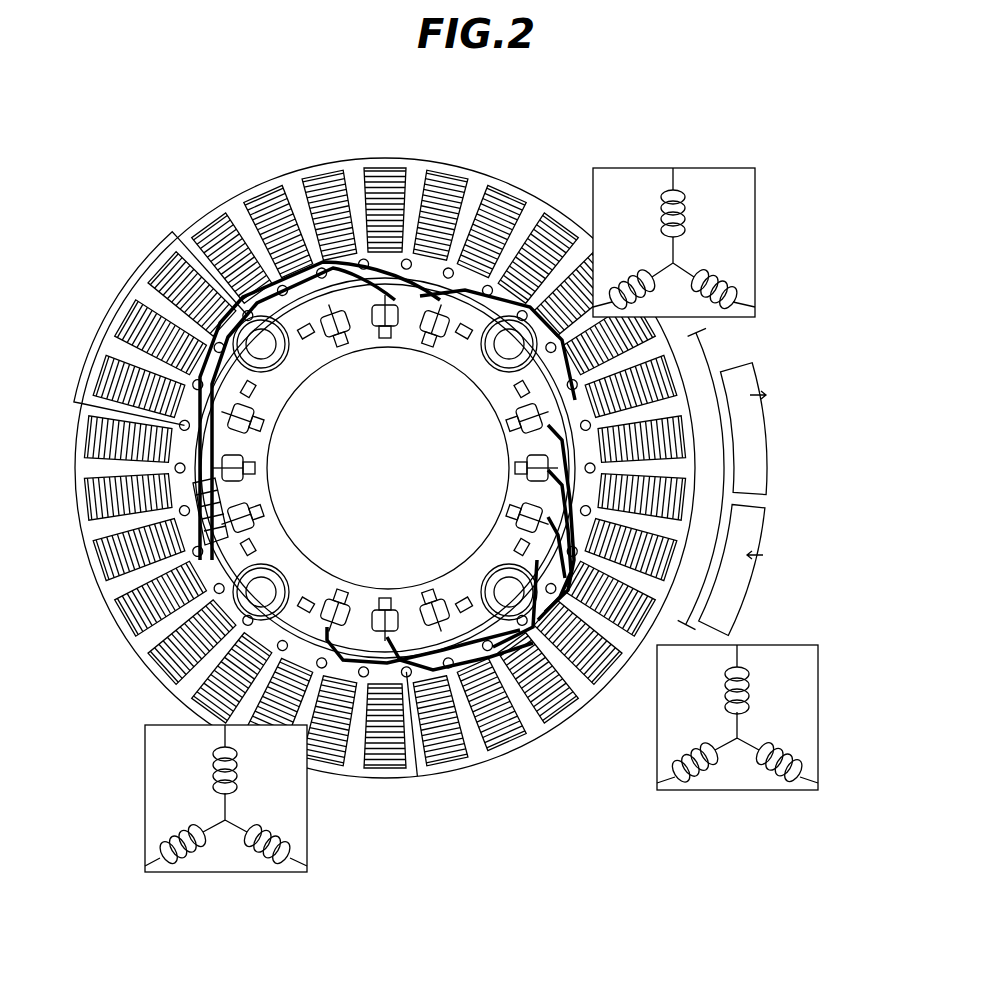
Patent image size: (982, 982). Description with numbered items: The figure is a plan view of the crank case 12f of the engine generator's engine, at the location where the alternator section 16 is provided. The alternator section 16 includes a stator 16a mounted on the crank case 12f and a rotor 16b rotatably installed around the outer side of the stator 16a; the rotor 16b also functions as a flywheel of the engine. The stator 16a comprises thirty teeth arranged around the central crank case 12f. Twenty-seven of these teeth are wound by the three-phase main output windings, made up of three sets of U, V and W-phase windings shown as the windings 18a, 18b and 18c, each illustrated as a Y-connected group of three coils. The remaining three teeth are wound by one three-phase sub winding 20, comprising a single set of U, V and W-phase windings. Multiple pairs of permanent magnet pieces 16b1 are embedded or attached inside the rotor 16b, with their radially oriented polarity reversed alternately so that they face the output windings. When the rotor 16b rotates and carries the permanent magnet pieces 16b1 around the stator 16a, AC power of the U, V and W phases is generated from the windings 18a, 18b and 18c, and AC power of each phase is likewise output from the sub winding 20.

The crank case 12f is at (406, 479).
The alternator section 16 is at (780, 481).
The stator 16a is at (698, 463).
The rotor 16b is at (830, 478).
The permanent magnet pieces 16b1 is at (730, 372).
The winding 18a is at (145, 810).
The winding 18b is at (757, 790).
The winding 18c is at (652, 168).
The sub winding 20 is at (126, 318).